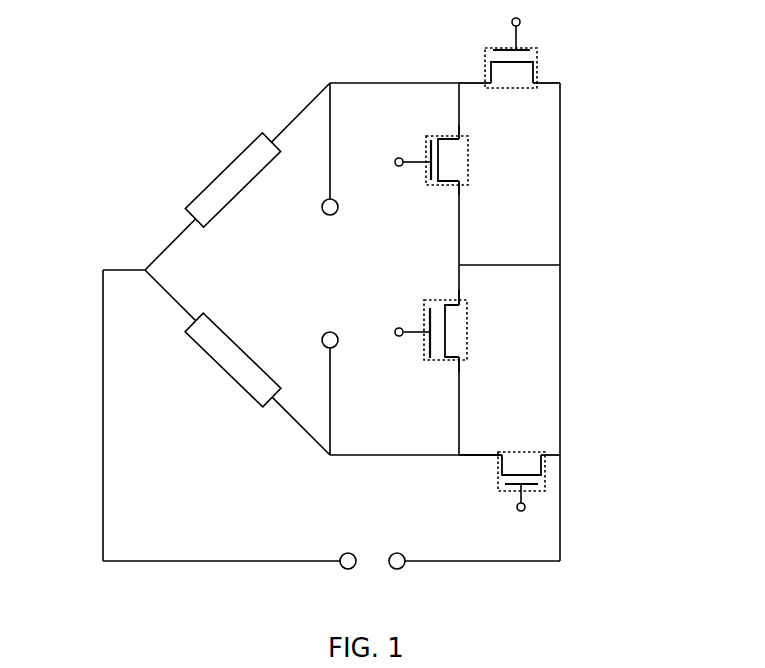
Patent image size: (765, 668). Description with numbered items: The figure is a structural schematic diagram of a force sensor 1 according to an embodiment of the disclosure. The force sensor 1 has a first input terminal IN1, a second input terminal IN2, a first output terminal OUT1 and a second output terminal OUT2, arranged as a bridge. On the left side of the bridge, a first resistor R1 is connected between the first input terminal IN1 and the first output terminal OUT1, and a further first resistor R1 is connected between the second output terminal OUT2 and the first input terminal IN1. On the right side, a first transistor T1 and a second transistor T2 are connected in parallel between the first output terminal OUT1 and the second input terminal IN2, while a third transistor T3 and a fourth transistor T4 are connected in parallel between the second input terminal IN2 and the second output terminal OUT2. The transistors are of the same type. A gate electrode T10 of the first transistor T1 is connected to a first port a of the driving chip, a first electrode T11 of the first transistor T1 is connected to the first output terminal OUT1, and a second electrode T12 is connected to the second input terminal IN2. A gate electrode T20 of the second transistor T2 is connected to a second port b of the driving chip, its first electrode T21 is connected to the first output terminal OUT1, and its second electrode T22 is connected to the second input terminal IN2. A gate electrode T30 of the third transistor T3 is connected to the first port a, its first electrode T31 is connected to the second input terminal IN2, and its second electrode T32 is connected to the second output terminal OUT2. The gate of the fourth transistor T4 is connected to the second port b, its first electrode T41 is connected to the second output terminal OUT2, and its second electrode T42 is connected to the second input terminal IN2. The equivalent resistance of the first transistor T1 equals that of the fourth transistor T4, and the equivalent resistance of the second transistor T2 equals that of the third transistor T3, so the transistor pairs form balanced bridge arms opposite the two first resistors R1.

The force sensor 1 is at (635, 37).
The first resistor R1 is at (230, 270).
The first output terminal OUT1 is at (327, 166).
The second output terminal OUT2 is at (327, 376).
The first input terminal IN1 is at (340, 546).
The second input terminal IN2 is at (406, 546).
The first transistor T1 is at (515, 63).
The gate electrode of the first transistor T10 is at (523, 34).
The first electrode of the first transistor T11 is at (474, 73).
The second electrode of the first transistor T12 is at (553, 73).
The second transistor T2 is at (444, 158).
The gate electrode of the second transistor T20 is at (413, 160).
The first electrode of the second transistor T21 is at (449, 129).
The second electrode of the second transistor T22 is at (476, 160).
The third transistor T3 is at (469, 406).
The gate electrode of the third transistor T30 is at (469, 417).
The first electrode of the third transistor T31 is at (447, 294).
The second electrode of the third transistor T32 is at (449, 366).
The fourth transistor T4 is at (511, 456).
The first electrode of the fourth transistor T41 is at (480, 465).
The second electrode of the fourth transistor T42 is at (549, 444).
The first port of the driving chip a is at (442, 177).
The second port of the driving chip b is at (441, 343).